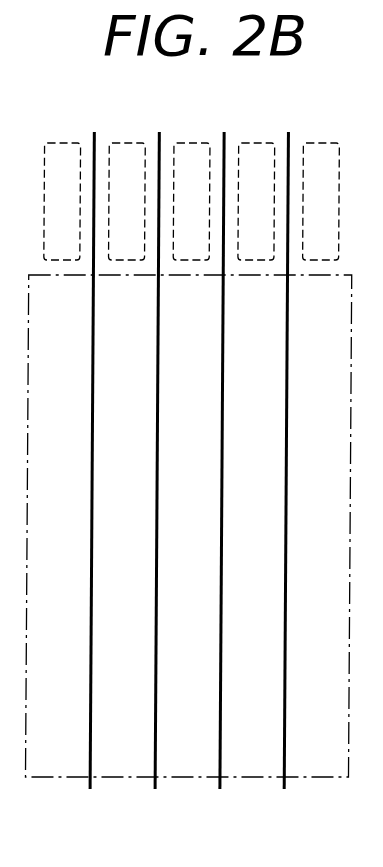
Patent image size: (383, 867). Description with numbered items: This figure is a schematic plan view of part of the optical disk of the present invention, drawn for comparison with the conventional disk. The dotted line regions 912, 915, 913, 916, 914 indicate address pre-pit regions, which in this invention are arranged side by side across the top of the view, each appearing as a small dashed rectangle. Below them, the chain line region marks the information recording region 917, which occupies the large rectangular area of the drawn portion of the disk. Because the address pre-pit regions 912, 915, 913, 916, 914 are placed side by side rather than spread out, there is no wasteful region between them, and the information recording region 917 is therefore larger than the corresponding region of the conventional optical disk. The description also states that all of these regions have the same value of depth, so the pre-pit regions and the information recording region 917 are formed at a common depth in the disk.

The first electrode region 912 is at (68, 143).
The third electrode region 913 is at (198, 143).
The fifth electrode region 914 is at (326, 143).
The second electrode region 915 is at (132, 143).
The fourth electrode region 916 is at (262, 143).
The information recording region 917 is at (315, 778).